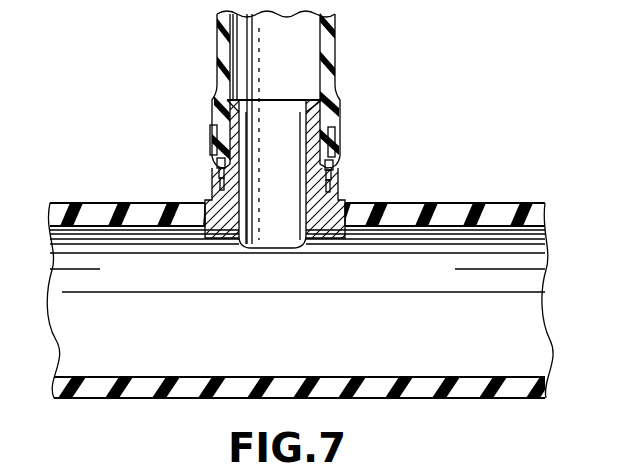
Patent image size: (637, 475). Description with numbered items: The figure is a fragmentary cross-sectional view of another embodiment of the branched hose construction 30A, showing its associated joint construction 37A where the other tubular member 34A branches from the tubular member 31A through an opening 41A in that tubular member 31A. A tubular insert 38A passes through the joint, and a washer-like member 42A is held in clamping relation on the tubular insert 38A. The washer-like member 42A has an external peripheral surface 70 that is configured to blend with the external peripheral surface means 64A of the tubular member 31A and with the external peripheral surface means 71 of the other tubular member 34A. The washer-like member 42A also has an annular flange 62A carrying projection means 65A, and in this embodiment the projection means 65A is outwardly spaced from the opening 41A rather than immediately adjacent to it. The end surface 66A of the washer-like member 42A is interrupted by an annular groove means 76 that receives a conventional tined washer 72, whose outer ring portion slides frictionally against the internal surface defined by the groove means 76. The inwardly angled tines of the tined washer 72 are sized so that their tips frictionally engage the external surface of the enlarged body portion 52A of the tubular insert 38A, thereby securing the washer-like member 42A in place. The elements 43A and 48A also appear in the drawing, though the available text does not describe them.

The branched hose construction 30A is at (305, 129).
The tubular member 31A is at (132, 398).
The other tubular member 34A is at (215, 42).
The joint construction 37A is at (196, 134).
The tubular insert 38A is at (214, 176).
The opening 41A is at (200, 242).
The washer-like member 42A is at (340, 193).
The seal 43A is at (325, 230).
The bore 48A is at (338, 206).
The enlarged body portion 52A is at (331, 198).
The annular flange 62A is at (330, 203).
The external peripheral surface means 64A is at (500, 205).
The projection means 65A is at (210, 206).
The end surface 66A is at (331, 184).
The external peripheral surface 70 is at (216, 181).
The external peripheral surface means 71 is at (337, 48).
The tined washer 72 is at (340, 177).
The annular groove means 76 is at (213, 166).